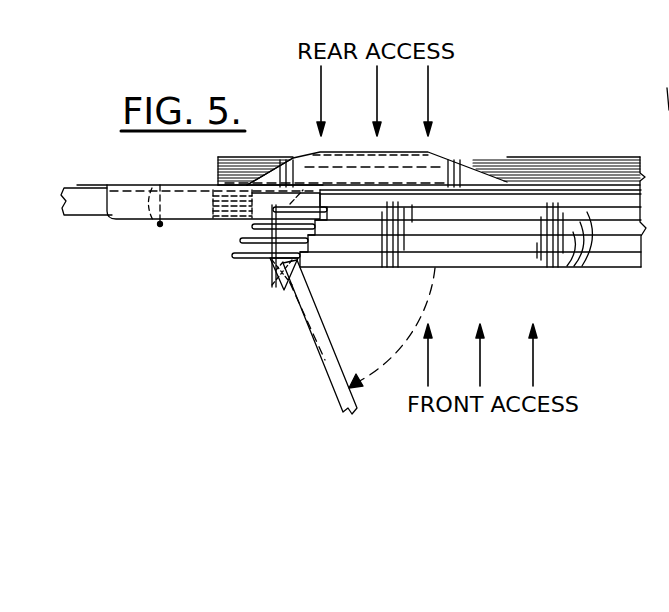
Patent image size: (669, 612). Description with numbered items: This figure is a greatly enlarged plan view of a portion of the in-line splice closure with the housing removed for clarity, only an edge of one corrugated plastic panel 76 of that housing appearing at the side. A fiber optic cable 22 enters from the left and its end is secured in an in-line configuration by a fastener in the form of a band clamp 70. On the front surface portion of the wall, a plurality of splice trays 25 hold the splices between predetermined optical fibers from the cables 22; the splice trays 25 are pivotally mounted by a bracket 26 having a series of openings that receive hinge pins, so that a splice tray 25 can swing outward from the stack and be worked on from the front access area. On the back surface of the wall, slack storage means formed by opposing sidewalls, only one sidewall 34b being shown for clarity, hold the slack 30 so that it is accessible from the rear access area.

The fiber optic cable 22 is at (104, 207).
The band clamp 70 is at (160, 185).
The slack 30 is at (581, 170).
The sidewall 34b is at (465, 160).
The bracket 26 is at (273, 277).
The splice tray 25 is at (333, 388).
The corrugated plastic panel 76 is at (667, 90).